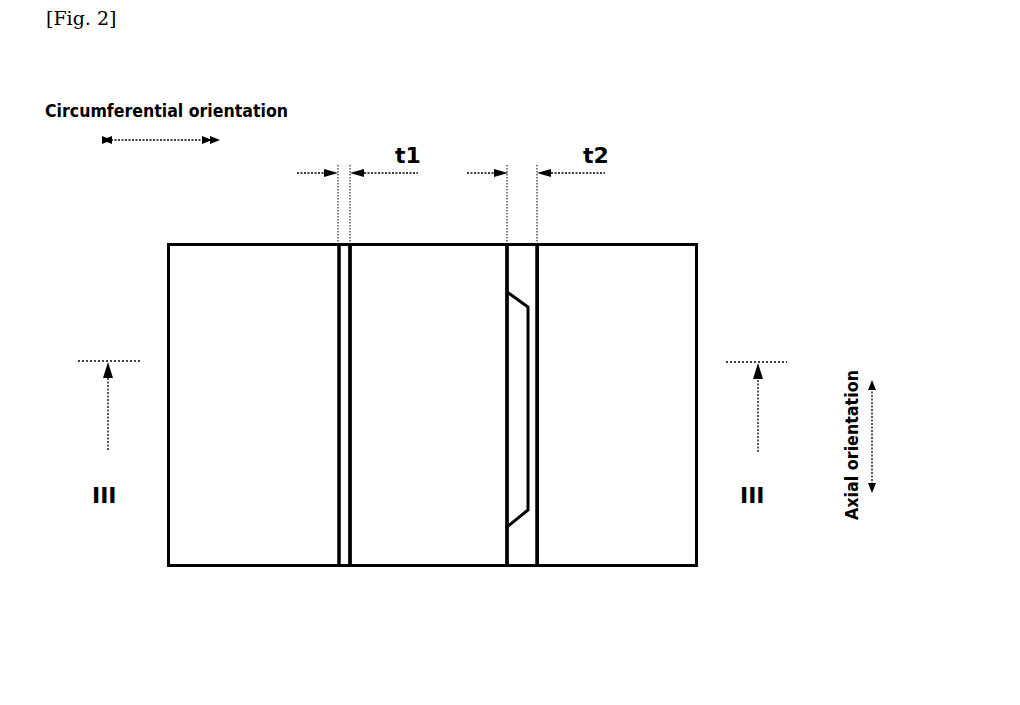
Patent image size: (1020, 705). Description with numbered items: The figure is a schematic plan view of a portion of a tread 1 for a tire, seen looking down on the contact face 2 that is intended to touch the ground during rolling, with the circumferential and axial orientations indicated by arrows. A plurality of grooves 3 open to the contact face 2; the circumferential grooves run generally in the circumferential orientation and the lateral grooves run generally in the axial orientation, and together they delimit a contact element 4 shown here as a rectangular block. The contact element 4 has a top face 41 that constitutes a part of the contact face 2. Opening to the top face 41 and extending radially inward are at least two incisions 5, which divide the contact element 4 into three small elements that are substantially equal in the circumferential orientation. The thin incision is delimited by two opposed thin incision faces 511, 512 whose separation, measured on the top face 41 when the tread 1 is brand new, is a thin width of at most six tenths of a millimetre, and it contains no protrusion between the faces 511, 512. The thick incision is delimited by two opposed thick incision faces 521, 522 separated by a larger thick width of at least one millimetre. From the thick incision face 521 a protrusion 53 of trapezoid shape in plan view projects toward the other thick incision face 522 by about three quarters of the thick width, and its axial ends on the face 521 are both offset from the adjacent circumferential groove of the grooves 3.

The tread 1 is at (674, 162).
The contact face 2 is at (655, 555).
The grooves 3 is at (150, 322).
The contact element 4 is at (443, 573).
The top face 41 is at (433, 387).
The incisions 5 is at (341, 570).
The thin incision face 511 is at (338, 274).
The thin incision face 512 is at (355, 300).
The thick incision face 521 is at (507, 272).
The thick incision face 522 is at (539, 282).
The protrusion 53 is at (513, 483).